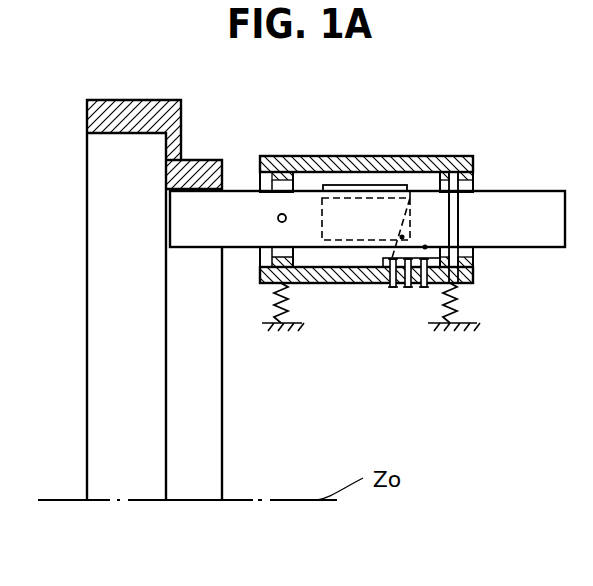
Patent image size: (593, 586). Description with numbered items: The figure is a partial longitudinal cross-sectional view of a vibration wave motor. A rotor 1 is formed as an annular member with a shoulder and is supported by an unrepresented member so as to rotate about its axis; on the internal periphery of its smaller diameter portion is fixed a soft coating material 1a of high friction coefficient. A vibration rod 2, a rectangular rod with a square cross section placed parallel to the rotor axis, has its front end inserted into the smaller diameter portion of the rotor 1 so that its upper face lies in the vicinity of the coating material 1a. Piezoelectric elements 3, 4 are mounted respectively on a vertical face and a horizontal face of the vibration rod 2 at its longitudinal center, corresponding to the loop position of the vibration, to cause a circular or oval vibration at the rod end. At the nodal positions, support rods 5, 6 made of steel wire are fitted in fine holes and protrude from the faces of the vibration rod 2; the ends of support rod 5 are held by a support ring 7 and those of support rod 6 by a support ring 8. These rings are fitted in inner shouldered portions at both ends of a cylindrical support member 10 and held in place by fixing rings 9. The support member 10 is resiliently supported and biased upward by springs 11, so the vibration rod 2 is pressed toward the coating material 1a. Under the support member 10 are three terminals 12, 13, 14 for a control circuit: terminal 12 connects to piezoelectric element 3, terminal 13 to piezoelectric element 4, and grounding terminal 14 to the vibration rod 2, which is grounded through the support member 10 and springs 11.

The rotor 1 is at (199, 172).
The soft coating material 1a is at (222, 180).
The vibration rod 2 is at (522, 202).
The piezoelectric element 3 is at (345, 210).
The piezoelectric element 4 is at (362, 188).
The support rod 5 is at (286, 221).
The support rod 6 is at (457, 225).
The support ring 7 is at (262, 282).
The support ring 8 is at (458, 160).
The fixing ring 9 is at (262, 255).
The support member 10 is at (386, 166).
The spring 11 is at (292, 302).
The terminal 12 is at (407, 288).
The terminal 13 is at (392, 288).
The terminal 14 is at (424, 288).